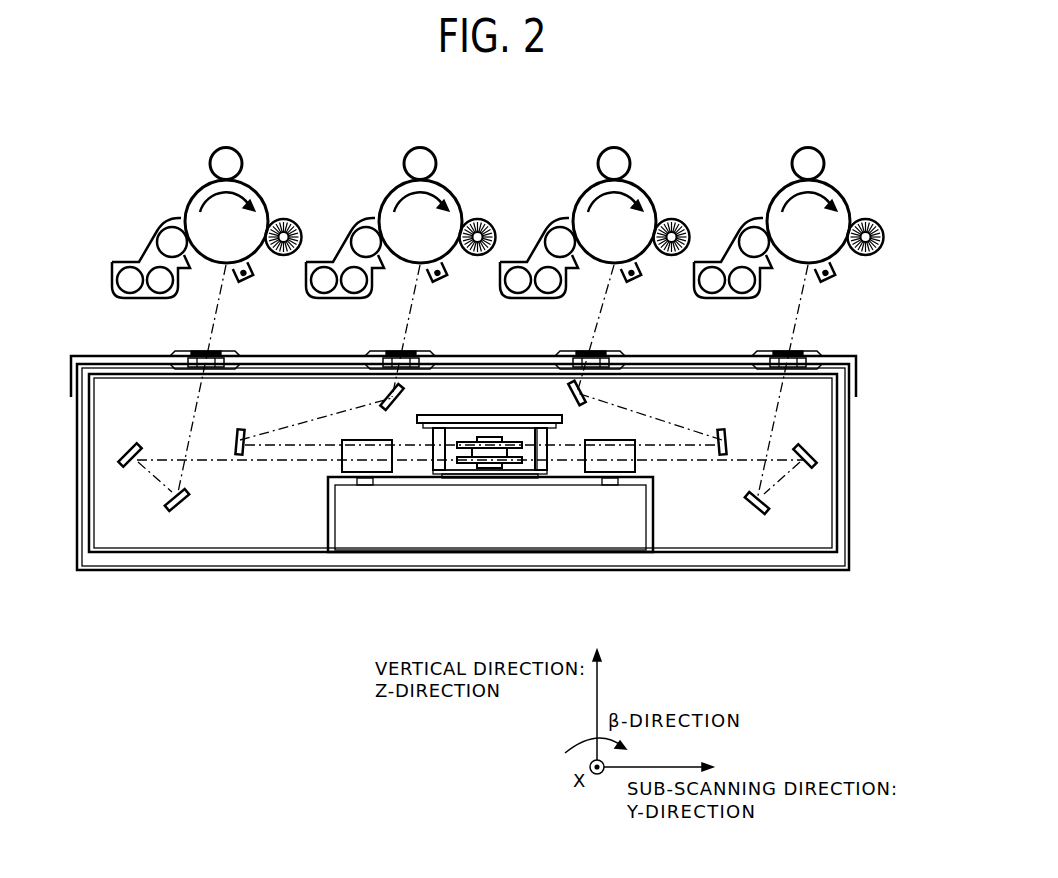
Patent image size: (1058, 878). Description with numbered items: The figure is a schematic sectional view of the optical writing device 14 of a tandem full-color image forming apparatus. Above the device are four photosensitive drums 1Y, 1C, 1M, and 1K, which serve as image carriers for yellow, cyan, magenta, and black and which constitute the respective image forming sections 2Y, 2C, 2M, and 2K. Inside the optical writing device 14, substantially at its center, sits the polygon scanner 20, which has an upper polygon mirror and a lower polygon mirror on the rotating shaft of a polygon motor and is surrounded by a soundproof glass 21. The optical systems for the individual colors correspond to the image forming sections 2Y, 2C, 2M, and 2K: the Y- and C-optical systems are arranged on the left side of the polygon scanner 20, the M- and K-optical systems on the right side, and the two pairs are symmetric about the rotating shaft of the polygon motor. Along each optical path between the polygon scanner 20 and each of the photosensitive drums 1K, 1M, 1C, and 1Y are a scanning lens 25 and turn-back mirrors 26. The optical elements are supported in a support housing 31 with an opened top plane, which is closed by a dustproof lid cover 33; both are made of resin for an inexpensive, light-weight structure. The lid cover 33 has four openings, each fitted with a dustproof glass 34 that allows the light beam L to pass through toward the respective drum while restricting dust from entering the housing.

The photosensitive drum (yellow) 1Y is at (218, 210).
The photosensitive drum (cyan) 1C is at (412, 210).
The photosensitive drum (magenta) 1M is at (605, 210).
The photosensitive drum (black) 1K is at (800, 210).
The image forming section (yellow) 2Y is at (251, 159).
The image forming section (cyan) 2C is at (445, 159).
The image forming section (magenta) 2M is at (640, 159).
The image forming section (black) 2K is at (833, 159).
The light beam L is at (218, 311).
The optical writing device 14 is at (490, 463).
The polygon scanner 20 is at (488, 463).
The soundproof glass 21 is at (440, 428).
The scanning lens (fθ lens) 25 is at (342, 470).
The turn-back mirror 26 is at (240, 432).
The support housing 31 is at (118, 573).
The lid cover 33 is at (461, 355).
The dustproof glass 34 is at (187, 354).